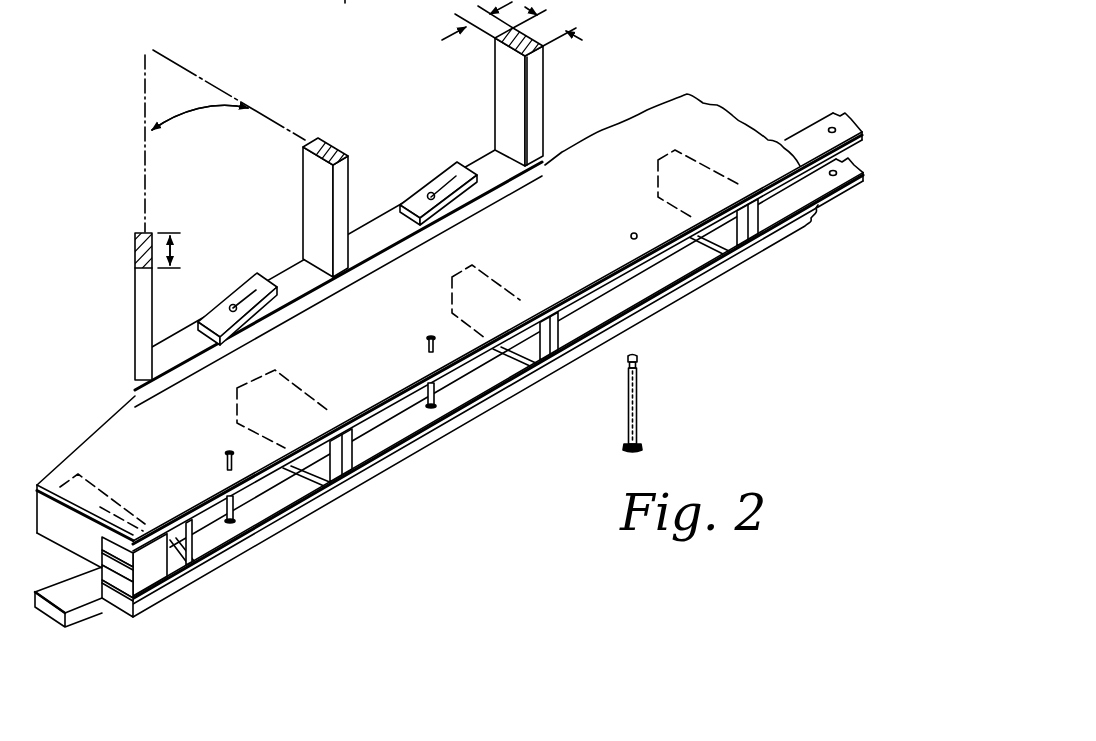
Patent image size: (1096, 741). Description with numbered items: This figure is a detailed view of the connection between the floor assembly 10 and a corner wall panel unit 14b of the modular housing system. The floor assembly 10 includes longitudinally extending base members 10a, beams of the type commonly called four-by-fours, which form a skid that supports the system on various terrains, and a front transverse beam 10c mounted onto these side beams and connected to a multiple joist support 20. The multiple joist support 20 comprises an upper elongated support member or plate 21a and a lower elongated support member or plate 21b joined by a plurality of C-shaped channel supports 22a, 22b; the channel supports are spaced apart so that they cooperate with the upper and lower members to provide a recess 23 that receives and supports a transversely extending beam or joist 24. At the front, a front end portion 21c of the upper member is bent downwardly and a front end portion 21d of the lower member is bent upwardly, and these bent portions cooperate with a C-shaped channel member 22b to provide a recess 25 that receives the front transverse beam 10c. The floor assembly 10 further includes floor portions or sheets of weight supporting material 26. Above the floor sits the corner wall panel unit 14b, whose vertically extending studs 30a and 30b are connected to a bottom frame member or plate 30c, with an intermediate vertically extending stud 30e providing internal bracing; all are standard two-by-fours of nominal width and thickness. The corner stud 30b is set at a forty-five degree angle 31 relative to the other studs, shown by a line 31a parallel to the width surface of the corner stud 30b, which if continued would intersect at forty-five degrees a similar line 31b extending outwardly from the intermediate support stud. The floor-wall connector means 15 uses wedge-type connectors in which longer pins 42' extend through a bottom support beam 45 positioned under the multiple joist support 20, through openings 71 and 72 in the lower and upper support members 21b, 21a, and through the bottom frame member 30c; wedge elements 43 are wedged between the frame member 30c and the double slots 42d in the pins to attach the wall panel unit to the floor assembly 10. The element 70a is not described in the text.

The floor assembly 10 is at (445, 340).
The longitudinally extending base member 10a is at (344, 5).
The front transverse beam 10c is at (37, 486).
The corner wall panel unit 14b is at (520, 84).
The floor-wall connector means 15 is at (394, 198).
The multiple joist support 20 is at (445, 396).
The upper elongated support member 21a is at (578, 288).
The lower elongated support member 21b is at (596, 345).
The front end portion of top joist support 21c is at (100, 537).
The front end portion of lower joist support member 21d is at (103, 578).
The C-shaped channel support 22a is at (498, 387).
The C-shaped channel support 22b is at (758, 210).
The recess 23 is at (743, 206).
The transversely extending beam or joist 24 is at (277, 370).
The recess 25 is at (158, 548).
The floor portion or sheet of weight supporting material 26 is at (518, 228).
The vertically extending frame member or stud 30a is at (537, 70).
The side frame member or corner stud 30b is at (135, 280).
The bottom frame member or plate 30c is at (481, 160).
The intermediately vertically extending stud 30e is at (303, 166).
The forty-five degree angle 31 is at (200, 119).
The line 31a is at (150, 183).
The line 31b is at (281, 118).
The pin 42' is at (570, 404).
The double slot 42d is at (428, 338).
The wedge element 43 is at (337, 234).
The bottom support beam 45 is at (678, 296).
The skid 70a is at (134, 618).
The opening 71 is at (233, 523).
The opening 72 is at (630, 236).